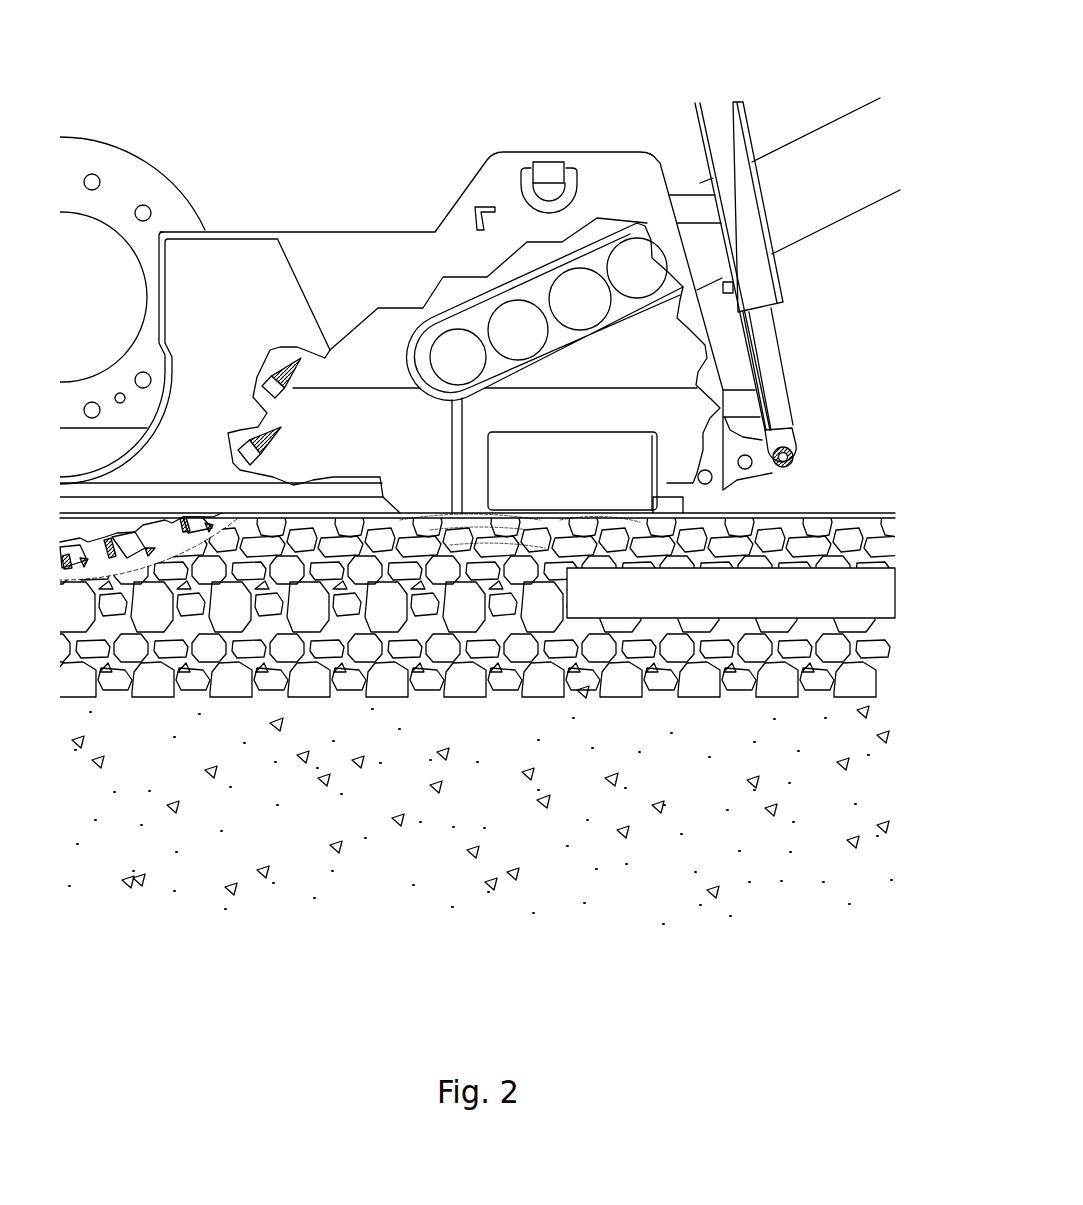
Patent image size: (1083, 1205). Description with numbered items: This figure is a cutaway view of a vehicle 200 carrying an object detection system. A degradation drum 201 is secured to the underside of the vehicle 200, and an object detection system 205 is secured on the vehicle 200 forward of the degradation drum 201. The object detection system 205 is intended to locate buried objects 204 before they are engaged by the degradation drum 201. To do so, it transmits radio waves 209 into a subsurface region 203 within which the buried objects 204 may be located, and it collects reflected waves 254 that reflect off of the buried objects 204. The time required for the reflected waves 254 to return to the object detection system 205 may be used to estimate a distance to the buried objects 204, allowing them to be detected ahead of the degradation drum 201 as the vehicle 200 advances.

The vehicle 200 is at (741, 85).
The degradation drum 201 is at (143, 178).
The subsurface region 203 is at (582, 680).
The buried objects 204 is at (800, 605).
The object detection system 205 is at (640, 465).
The radio waves 209 is at (537, 563).
The reflected waves 254 is at (527, 513).